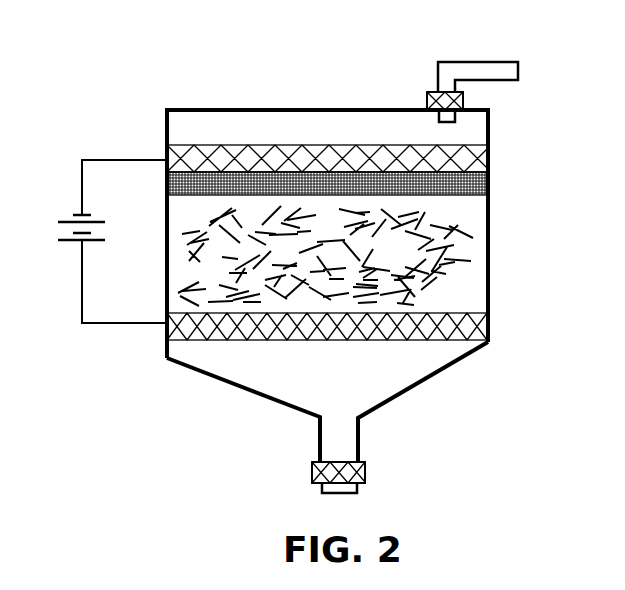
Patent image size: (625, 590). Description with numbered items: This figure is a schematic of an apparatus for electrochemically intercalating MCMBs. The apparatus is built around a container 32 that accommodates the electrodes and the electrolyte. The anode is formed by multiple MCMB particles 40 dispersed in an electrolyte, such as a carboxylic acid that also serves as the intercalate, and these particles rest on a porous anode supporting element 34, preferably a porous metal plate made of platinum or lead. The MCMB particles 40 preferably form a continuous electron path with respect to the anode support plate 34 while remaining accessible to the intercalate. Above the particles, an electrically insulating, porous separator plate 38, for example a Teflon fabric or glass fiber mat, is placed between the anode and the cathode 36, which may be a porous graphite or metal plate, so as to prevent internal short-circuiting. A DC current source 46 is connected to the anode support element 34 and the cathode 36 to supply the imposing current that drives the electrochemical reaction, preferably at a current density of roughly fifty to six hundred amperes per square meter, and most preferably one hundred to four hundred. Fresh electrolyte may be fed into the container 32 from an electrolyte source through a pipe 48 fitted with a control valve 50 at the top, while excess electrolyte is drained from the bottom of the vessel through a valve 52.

The container 32 is at (492, 273).
The porous anode supporting element 34 is at (448, 330).
The cathode 36 is at (490, 158).
The porous separator plate 38 is at (490, 183).
The MCMB particles 40 is at (462, 298).
The DC current source 46 is at (93, 241).
The pipe 48 is at (493, 70).
The control valve 50 is at (430, 92).
The valve 52 is at (352, 472).